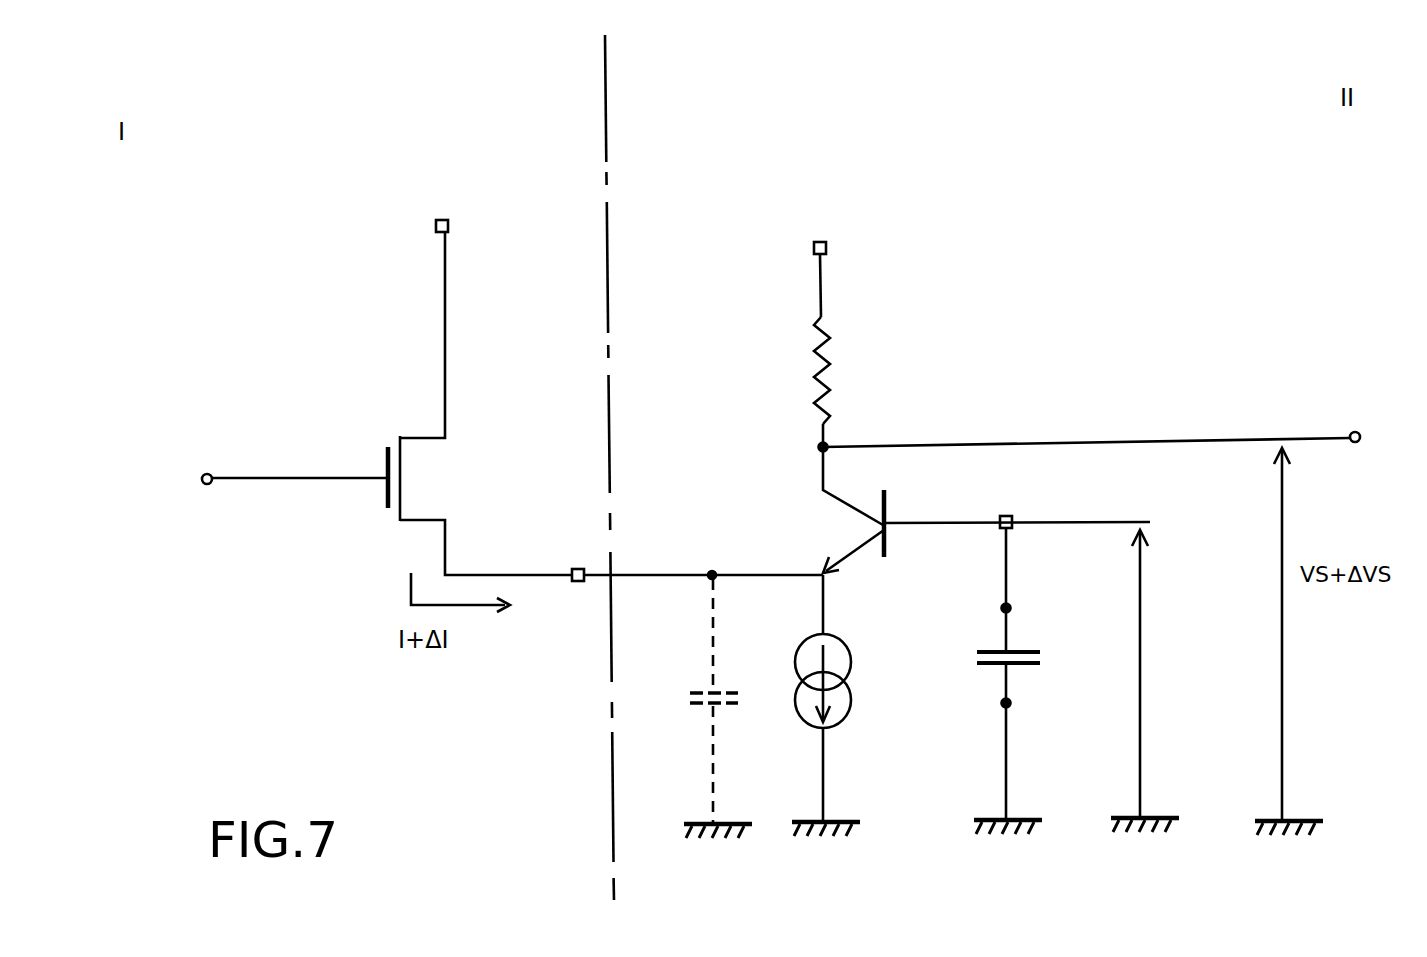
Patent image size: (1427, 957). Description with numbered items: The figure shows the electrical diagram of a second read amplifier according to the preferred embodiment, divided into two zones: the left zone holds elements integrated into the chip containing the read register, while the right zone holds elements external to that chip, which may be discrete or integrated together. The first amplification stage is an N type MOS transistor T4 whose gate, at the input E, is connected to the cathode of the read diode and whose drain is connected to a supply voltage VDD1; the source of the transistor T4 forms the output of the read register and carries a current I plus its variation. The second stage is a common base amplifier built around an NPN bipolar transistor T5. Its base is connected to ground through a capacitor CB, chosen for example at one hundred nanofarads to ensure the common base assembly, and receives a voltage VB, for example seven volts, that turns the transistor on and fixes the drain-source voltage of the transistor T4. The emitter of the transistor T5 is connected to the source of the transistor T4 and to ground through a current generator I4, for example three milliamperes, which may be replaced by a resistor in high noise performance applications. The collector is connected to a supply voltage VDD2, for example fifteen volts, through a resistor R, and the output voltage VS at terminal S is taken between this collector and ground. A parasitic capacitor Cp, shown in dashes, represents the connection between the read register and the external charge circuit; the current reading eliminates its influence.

The MOS transistor T4 is at (420, 422).
The bipolar transistor T5 is at (817, 528).
The resistor R is at (838, 377).
The parasitic capacitor Cp is at (692, 708).
The current generator I4 is at (841, 705).
The capacitor CB is at (1025, 680).
The input terminal E is at (281, 462).
The output terminal S is at (1091, 418).
The supply voltage VDD1 is at (445, 198).
The supply voltage VDD2 is at (844, 214).
The voltage VB is at (1152, 681).